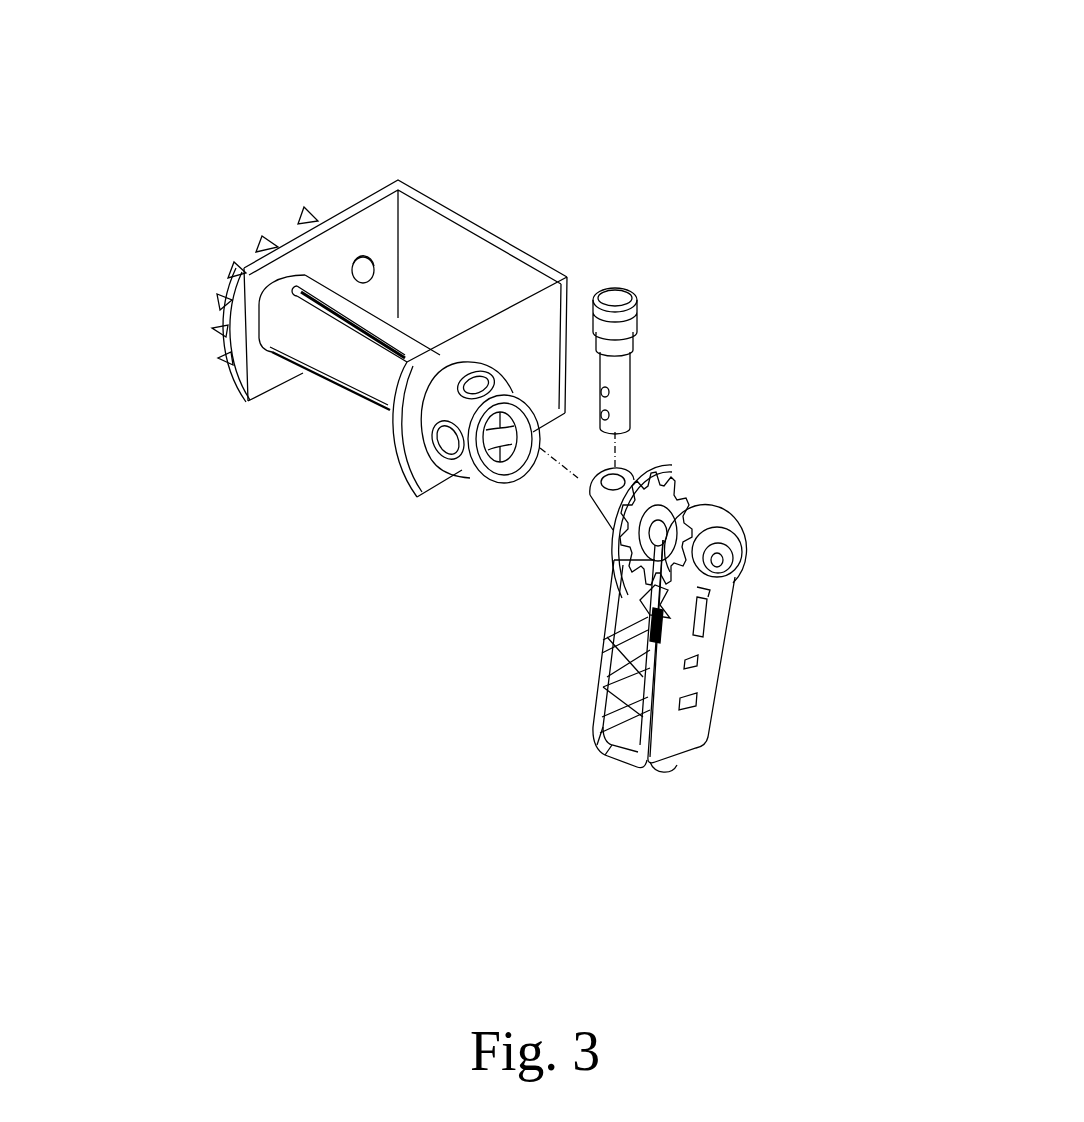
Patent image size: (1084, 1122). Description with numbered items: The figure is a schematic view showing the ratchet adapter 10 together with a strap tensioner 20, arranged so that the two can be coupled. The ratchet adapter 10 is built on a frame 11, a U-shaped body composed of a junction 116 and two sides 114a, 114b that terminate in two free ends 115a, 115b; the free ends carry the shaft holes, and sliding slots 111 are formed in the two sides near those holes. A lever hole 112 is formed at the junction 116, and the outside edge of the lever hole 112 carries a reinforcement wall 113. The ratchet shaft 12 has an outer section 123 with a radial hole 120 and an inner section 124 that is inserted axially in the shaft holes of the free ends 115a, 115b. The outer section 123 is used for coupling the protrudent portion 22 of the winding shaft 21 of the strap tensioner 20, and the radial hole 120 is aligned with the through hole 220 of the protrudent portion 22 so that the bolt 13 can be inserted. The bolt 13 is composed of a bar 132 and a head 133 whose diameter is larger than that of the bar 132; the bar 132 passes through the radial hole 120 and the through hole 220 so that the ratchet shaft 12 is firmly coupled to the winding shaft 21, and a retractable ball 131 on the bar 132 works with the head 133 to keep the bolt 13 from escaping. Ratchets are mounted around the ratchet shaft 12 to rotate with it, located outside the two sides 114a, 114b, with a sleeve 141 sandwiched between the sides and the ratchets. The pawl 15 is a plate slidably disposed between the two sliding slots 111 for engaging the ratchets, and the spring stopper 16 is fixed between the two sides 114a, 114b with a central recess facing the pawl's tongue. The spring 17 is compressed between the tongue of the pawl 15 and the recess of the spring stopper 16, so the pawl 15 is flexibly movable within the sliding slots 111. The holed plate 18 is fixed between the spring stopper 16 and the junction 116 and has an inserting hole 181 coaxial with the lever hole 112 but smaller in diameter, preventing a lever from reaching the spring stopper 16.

The ratchet adapter 10 is at (538, 600).
The frame 11 is at (606, 660).
The sliding slots 111 is at (697, 637).
The lever hole 112 is at (590, 740).
The reinforcement wall 113 is at (673, 767).
The side 114a is at (610, 687).
The side 114b is at (771, 680).
The free end 115a is at (726, 500).
The free end 115b is at (681, 622).
The junction 116 is at (613, 753).
The ratchet shaft 12 is at (775, 463).
The radial hole 120 is at (627, 472).
The outer section 123 is at (595, 498).
The inner section 124 is at (723, 557).
The bolt 13 is at (699, 331).
The retractable ball 131 is at (608, 392).
The bar 132 is at (627, 368).
The head 133 is at (637, 328).
The sleeve 141 is at (682, 480).
The pawl 15 is at (647, 593).
The spring stopper 16 is at (610, 623).
The spring 17 is at (660, 606).
The holed plate 18 is at (610, 720).
The inserting hole 181 is at (610, 660).
The strap tensioner 20 is at (509, 208).
The winding shaft 21 is at (343, 363).
The protrudent portion 22 is at (437, 378).
The through hole 220 is at (483, 387).